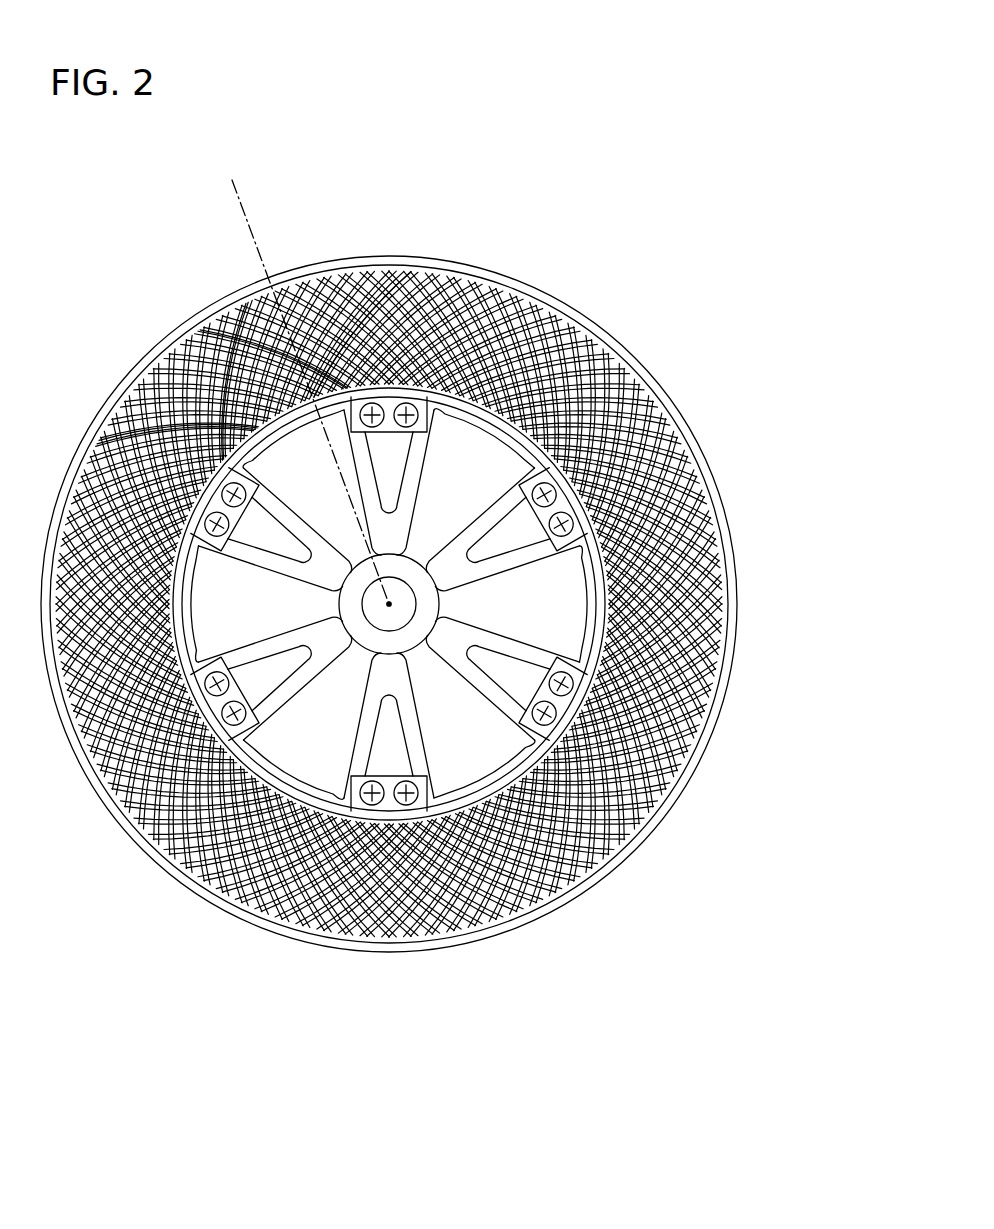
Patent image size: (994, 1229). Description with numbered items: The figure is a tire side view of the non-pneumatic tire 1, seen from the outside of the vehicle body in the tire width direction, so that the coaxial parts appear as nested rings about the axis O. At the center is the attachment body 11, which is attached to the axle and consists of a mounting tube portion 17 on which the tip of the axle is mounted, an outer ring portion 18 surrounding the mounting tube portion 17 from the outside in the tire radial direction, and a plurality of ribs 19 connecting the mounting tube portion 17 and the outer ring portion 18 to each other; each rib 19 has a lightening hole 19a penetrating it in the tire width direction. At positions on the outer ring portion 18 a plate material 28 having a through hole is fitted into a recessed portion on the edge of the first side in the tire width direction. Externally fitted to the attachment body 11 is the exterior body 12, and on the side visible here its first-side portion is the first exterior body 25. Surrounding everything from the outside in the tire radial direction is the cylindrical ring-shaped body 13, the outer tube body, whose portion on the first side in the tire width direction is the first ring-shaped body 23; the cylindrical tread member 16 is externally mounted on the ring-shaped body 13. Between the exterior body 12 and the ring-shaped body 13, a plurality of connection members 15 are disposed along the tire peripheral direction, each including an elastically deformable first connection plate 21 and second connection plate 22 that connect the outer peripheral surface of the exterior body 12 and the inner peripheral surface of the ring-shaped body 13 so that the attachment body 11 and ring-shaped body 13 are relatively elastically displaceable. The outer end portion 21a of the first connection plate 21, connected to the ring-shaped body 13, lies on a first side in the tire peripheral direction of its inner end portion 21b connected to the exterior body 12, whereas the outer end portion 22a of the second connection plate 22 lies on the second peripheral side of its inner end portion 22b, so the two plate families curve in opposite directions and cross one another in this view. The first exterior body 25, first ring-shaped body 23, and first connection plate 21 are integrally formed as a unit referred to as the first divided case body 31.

The non-pneumatic tire 1 is at (708, 172).
The axis O is at (295, 380).
The attachment body 11 is at (800, 515).
The exterior body 12 is at (389, 498).
The ring-shaped body 13 is at (389, 559).
The connection member 15 is at (78, 238).
The tread member 16 is at (395, 254).
The mounting tube portion 17 is at (428, 604).
The outer ring portion 18 is at (604, 581).
The rib 19 is at (512, 636).
The lightening hole 19a is at (659, 699).
The first connection plate 21 is at (456, 561).
The outer end portion of the first connection plate 21a is at (272, 660).
The inner end portion of the first connection plate 21b is at (220, 577).
The second connection plate 22 is at (456, 646).
The outer end portion of the second connection plate 22a is at (235, 641).
The inner end portion of the second connection plate 22b is at (399, 533).
The first ring-shaped body 23 is at (548, 300).
The first exterior body 25 is at (449, 382).
The plate material 28 is at (560, 507).
The first divided case body 31 is at (678, 312).